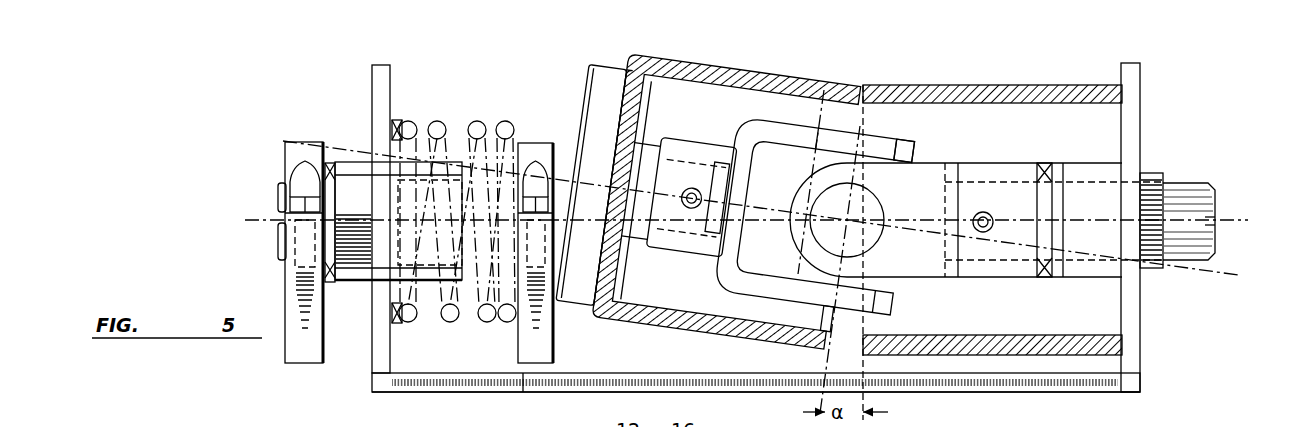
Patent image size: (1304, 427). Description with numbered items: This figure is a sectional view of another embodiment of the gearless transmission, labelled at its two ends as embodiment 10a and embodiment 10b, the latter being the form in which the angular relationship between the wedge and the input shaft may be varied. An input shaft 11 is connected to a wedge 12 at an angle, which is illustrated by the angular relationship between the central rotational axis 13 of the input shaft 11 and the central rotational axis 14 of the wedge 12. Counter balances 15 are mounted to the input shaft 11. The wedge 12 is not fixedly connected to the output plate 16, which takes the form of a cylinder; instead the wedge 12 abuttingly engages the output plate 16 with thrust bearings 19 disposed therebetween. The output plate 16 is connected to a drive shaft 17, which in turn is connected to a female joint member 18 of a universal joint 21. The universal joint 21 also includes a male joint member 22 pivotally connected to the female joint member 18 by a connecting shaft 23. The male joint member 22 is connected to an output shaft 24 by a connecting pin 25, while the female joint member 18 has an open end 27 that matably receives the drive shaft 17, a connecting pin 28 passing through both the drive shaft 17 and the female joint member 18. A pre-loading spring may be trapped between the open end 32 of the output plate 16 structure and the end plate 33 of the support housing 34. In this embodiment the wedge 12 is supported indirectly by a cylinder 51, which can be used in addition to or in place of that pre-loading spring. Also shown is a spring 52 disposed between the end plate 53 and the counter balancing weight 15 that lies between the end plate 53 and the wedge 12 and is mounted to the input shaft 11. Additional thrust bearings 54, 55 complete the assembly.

The gearless transmission embodiment 10a is at (1166, 100).
The gearless transmission embodiment 10b is at (810, 407).
The input shaft 11 is at (352, 190).
The wedge 12 is at (600, 67).
The central rotational axis of the input shaft 13 is at (257, 223).
The central rotational axis of the wedge 14 is at (283, 137).
The counter balances 15 is at (305, 350).
The output plate 16 is at (645, 50).
The drive shaft 17 is at (628, 235).
The female joint member 18 is at (790, 122).
The thrust bearings 19 is at (598, 262).
The universal joint 21 is at (835, 125).
The male joint member 22 is at (807, 268).
The connecting shaft 23 is at (818, 232).
The output shaft 24 is at (1182, 197).
The connecting pin 25 is at (983, 232).
The open end of the female joint member 27 is at (660, 136).
The connecting pin 28 is at (693, 190).
The open end of the output plate structure 32 is at (840, 325).
The end plate of the support housing 33 is at (1070, 335).
The support housing 34 is at (388, 395).
The cylinder 51 is at (985, 85).
The spring 52 is at (492, 123).
The end plate 53 is at (372, 102).
The thrust bearing 54 is at (292, 160).
The thrust bearing 55 is at (1037, 268).